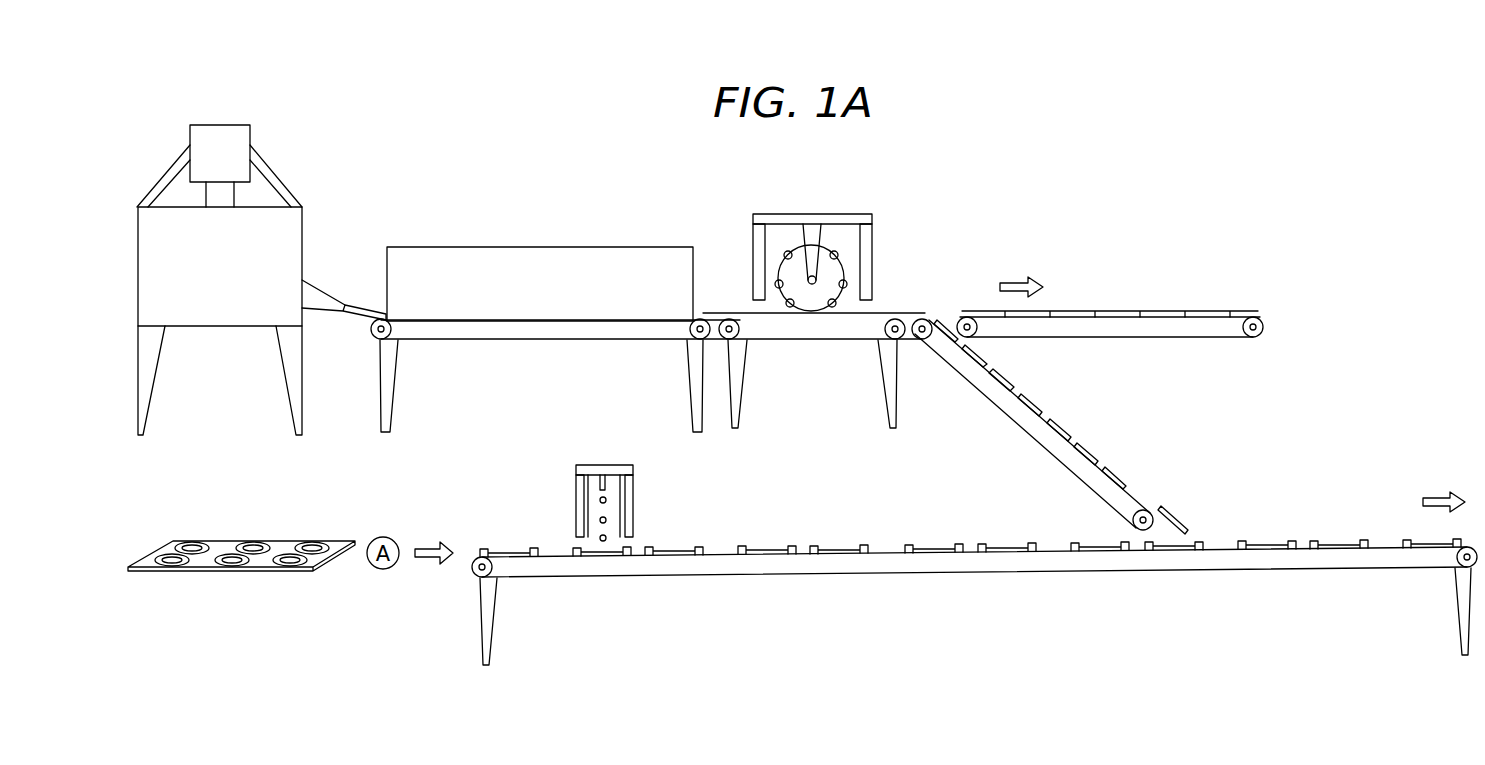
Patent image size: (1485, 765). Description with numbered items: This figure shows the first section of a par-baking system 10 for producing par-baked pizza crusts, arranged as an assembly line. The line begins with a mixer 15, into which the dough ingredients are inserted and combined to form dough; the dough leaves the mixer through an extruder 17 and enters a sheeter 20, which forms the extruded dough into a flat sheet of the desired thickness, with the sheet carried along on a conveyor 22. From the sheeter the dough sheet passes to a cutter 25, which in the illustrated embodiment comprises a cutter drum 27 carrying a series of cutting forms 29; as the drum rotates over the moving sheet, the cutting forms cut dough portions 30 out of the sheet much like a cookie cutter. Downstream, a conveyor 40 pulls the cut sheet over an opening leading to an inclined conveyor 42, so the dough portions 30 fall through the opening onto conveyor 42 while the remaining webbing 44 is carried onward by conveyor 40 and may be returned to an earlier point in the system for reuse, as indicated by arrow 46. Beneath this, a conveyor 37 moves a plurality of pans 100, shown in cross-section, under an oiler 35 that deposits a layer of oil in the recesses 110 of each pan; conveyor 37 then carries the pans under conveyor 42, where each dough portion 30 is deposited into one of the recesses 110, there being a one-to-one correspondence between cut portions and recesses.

The par-baking system 10 is at (600, 138).
The mixer 15 is at (218, 125).
The extruder 17 is at (322, 287).
The sheeter 20 is at (545, 235).
The first conveyor 22 is at (546, 345).
The cutter 25 is at (812, 207).
The cutter drum 27 is at (782, 243).
The cutting forms 29 is at (850, 258).
The dough portions 30 is at (1018, 392).
The oiler 35 is at (605, 465).
The conveyor 37 is at (986, 578).
The conveyor 40 is at (1166, 338).
The conveyor 42 is at (1022, 431).
The webbing 44 is at (1200, 311).
The arrow 46 is at (1018, 275).
The pans 100 is at (253, 527).
The recesses 110 is at (505, 548).